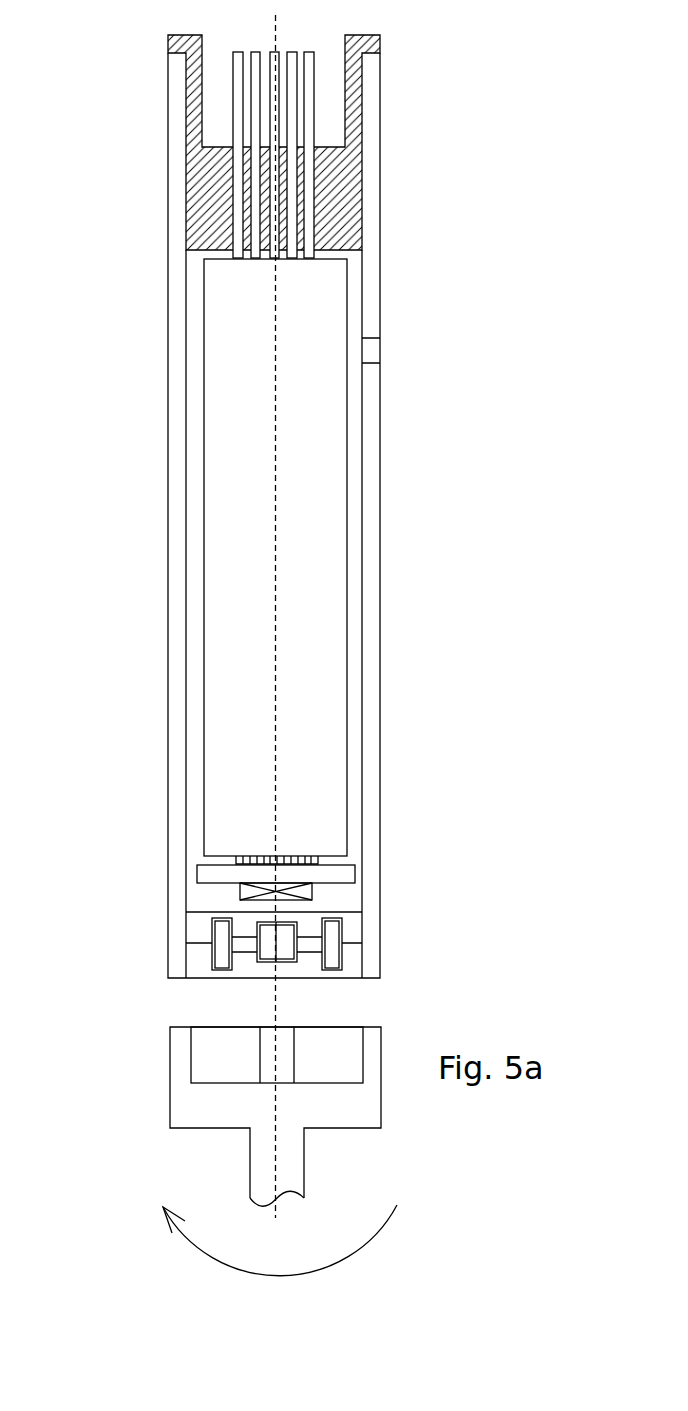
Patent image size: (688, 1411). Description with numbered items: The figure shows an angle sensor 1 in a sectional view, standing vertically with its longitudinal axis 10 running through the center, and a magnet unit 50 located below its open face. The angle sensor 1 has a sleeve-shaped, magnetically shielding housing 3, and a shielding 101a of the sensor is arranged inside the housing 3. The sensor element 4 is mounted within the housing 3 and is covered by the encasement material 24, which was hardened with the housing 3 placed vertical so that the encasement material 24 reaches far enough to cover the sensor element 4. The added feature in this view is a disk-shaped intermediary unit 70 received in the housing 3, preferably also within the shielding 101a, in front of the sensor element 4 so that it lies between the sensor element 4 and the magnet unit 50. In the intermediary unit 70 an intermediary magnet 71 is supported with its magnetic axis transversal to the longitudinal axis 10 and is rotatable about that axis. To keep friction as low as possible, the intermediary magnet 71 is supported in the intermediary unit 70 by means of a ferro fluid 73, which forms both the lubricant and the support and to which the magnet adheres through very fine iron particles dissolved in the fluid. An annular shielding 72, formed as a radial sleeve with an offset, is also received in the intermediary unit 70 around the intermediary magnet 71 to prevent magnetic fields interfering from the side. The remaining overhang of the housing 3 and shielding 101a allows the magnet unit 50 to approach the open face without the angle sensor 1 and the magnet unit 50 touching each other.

The angle sensor 1 is at (133, 691).
The housing 3 is at (347, 506).
The shielding 101a is at (372, 875).
The longitudinal axis 10 is at (276, 605).
The sensor element 4 is at (232, 883).
The encasement material 24 is at (218, 897).
The intermediary unit 70 is at (363, 922).
The intermediary magnet 71 is at (288, 933).
The annular shielding 72 is at (218, 935).
The ferro fluid 73 is at (263, 962).
The magnet unit 50 is at (133, 1091).